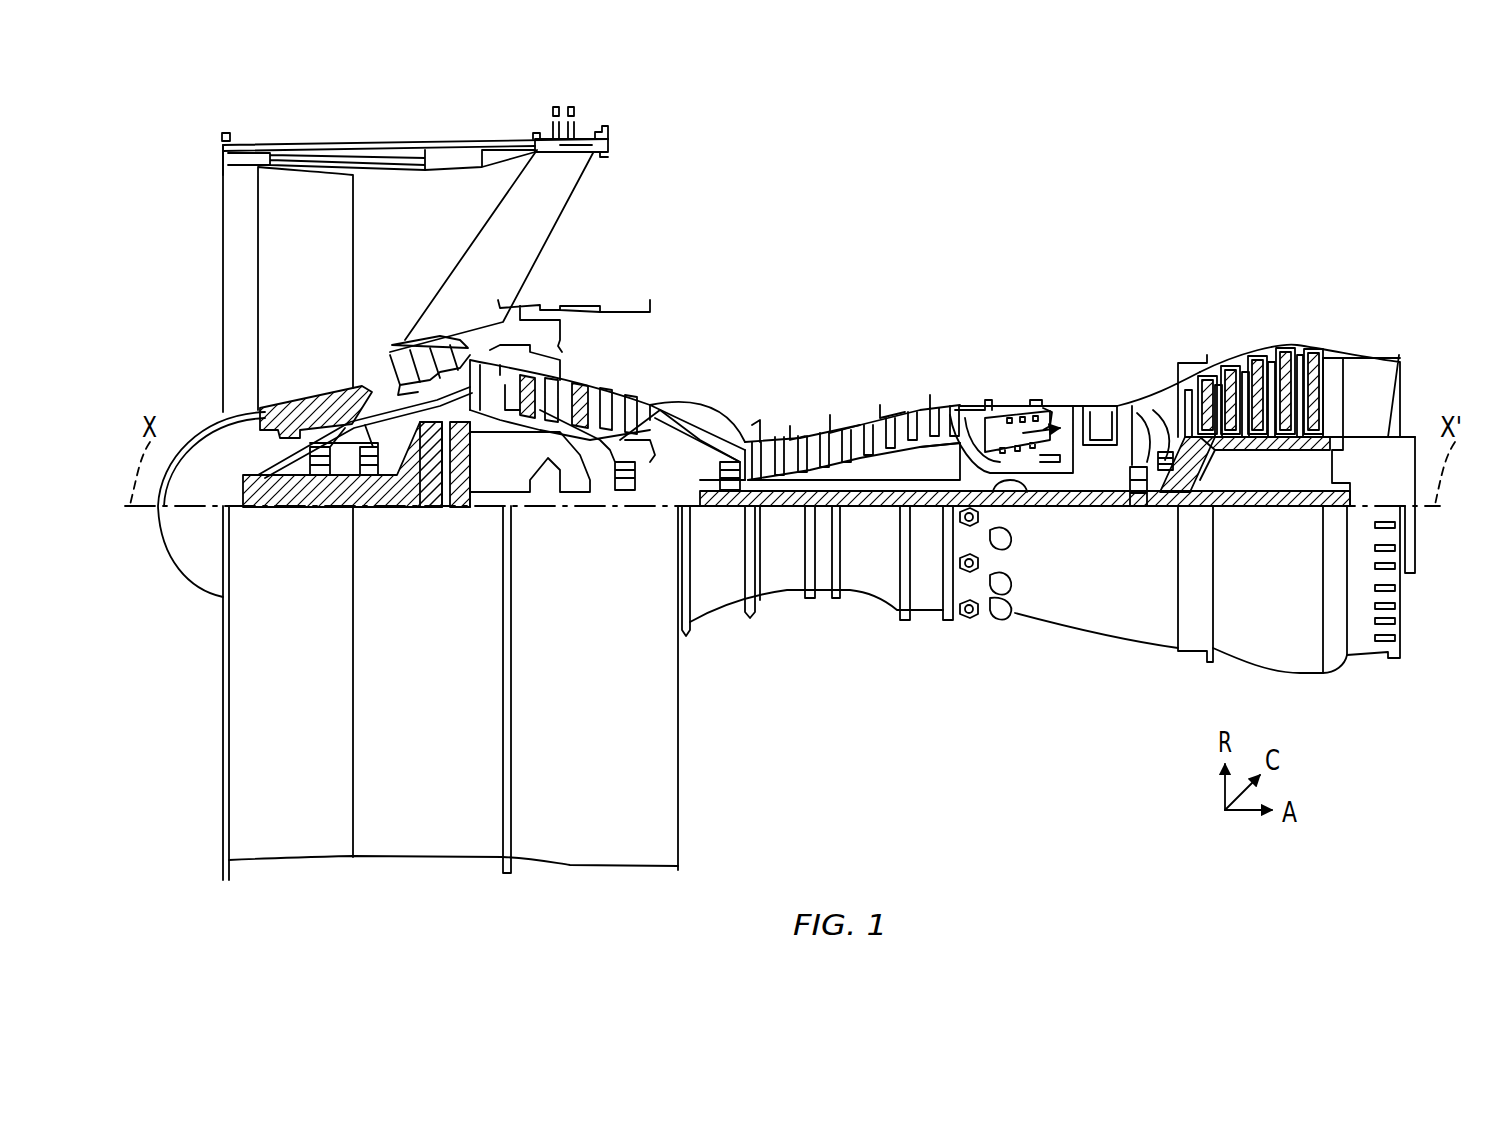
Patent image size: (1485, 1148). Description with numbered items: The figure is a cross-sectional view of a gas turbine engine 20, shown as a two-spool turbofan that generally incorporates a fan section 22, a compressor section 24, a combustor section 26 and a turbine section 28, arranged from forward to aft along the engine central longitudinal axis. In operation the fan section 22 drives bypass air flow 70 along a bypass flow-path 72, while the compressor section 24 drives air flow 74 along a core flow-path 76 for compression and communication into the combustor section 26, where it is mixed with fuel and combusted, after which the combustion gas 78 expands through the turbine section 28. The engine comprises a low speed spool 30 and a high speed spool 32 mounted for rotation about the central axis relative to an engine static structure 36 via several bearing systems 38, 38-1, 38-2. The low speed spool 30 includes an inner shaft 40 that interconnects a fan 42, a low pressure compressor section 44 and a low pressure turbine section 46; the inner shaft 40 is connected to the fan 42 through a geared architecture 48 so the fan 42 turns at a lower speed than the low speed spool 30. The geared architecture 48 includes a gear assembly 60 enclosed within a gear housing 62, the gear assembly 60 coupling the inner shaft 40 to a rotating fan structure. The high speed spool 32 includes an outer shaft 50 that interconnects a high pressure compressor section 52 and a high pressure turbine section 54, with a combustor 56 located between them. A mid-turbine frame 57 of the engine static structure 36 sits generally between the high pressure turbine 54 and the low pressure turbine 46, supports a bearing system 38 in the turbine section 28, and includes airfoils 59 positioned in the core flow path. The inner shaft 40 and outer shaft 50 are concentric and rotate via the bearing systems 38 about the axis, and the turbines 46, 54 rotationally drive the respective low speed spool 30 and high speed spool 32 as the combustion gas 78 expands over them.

The gas turbine engine 20 is at (1250, 205).
The fan section 22 is at (503, 120).
The compressor section 24 is at (512, 273).
The combustor section 26 is at (1082, 273).
The turbine section 28 is at (1336, 273).
The low speed spool 30 is at (875, 530).
The high speed spool 32 is at (928, 463).
The engine static structure 36 is at (207, 864).
The bearing system 38 is at (1152, 508).
The bearing system 38-1 is at (320, 475).
The bearing system 38-2 is at (628, 500).
The inner shaft 40 is at (725, 503).
The fan 42 is at (322, 285).
The low pressure compressor section 44 is at (594, 388).
The low pressure turbine section 46 is at (1262, 413).
The geared architecture 48 is at (470, 525).
The outer shaft 50 is at (1027, 506).
The high pressure compressor section 52 is at (850, 432).
The high pressure turbine section 54 is at (1102, 403).
The combustor 56 is at (1015, 428).
The mid-turbine frame 57 is at (1153, 407).
The airfoils 59 is at (1163, 417).
The gear assembly 60 is at (468, 477).
The gear housing 62 is at (467, 440).
The bypass air flow 70 is at (402, 225).
The bypass flow-path 72 is at (430, 285).
The air flow 74 is at (665, 403).
The core flow-path 76 is at (372, 358).
The combustion gas 78 is at (1050, 400).